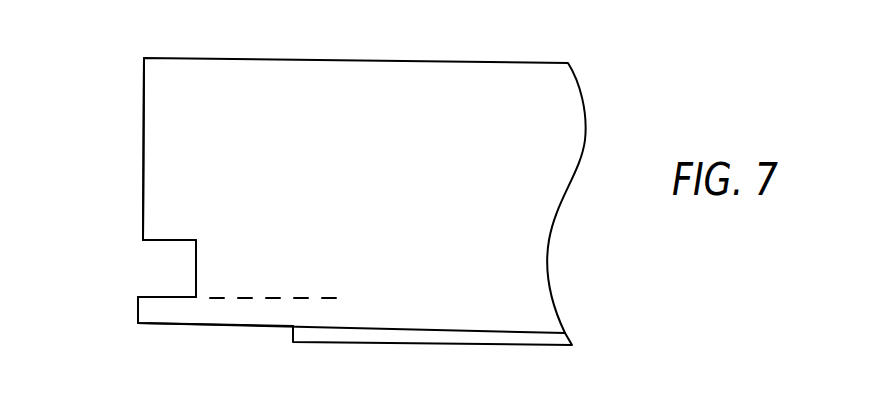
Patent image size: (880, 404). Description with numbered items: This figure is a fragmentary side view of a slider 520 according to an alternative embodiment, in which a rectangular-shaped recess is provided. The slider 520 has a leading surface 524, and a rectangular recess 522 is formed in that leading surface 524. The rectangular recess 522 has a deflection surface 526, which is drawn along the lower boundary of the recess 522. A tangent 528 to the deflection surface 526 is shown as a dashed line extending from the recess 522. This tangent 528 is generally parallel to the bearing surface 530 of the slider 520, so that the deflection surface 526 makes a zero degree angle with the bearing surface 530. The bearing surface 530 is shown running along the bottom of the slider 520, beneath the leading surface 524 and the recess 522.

The slider 520 is at (513, 55).
The rectangular recess 522 is at (148, 257).
The leading surface 524 is at (144, 117).
The deflection surface 526 is at (163, 297).
The tangent 528 is at (297, 297).
The bearing surface 530 is at (355, 342).